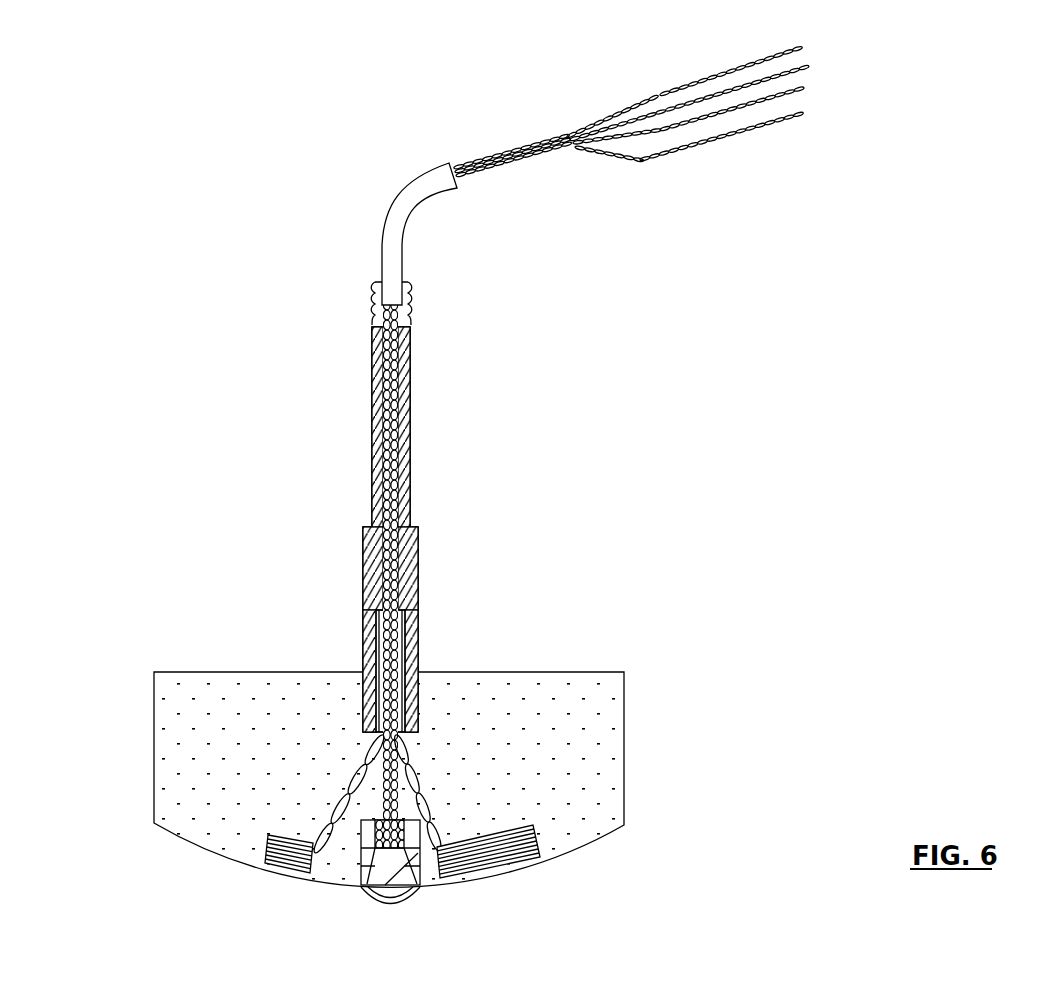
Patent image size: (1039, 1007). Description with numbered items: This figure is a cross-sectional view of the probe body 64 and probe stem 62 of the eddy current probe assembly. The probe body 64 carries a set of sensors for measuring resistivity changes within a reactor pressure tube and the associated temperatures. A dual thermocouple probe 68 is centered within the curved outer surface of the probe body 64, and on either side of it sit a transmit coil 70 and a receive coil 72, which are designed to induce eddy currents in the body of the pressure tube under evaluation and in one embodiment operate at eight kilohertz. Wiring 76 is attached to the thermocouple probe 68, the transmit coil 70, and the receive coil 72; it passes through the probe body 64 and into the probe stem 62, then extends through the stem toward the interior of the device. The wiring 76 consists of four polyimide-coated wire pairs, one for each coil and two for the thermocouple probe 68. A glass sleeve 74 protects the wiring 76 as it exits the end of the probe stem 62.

The probe stem 62 is at (417, 537).
The probe body 64 is at (625, 695).
The dual thermocouple probe 68 is at (402, 903).
The transmit coil 70 is at (520, 858).
The receive coil 72 is at (283, 872).
The glass sleeve 74 is at (403, 235).
The wiring 76 is at (527, 175).